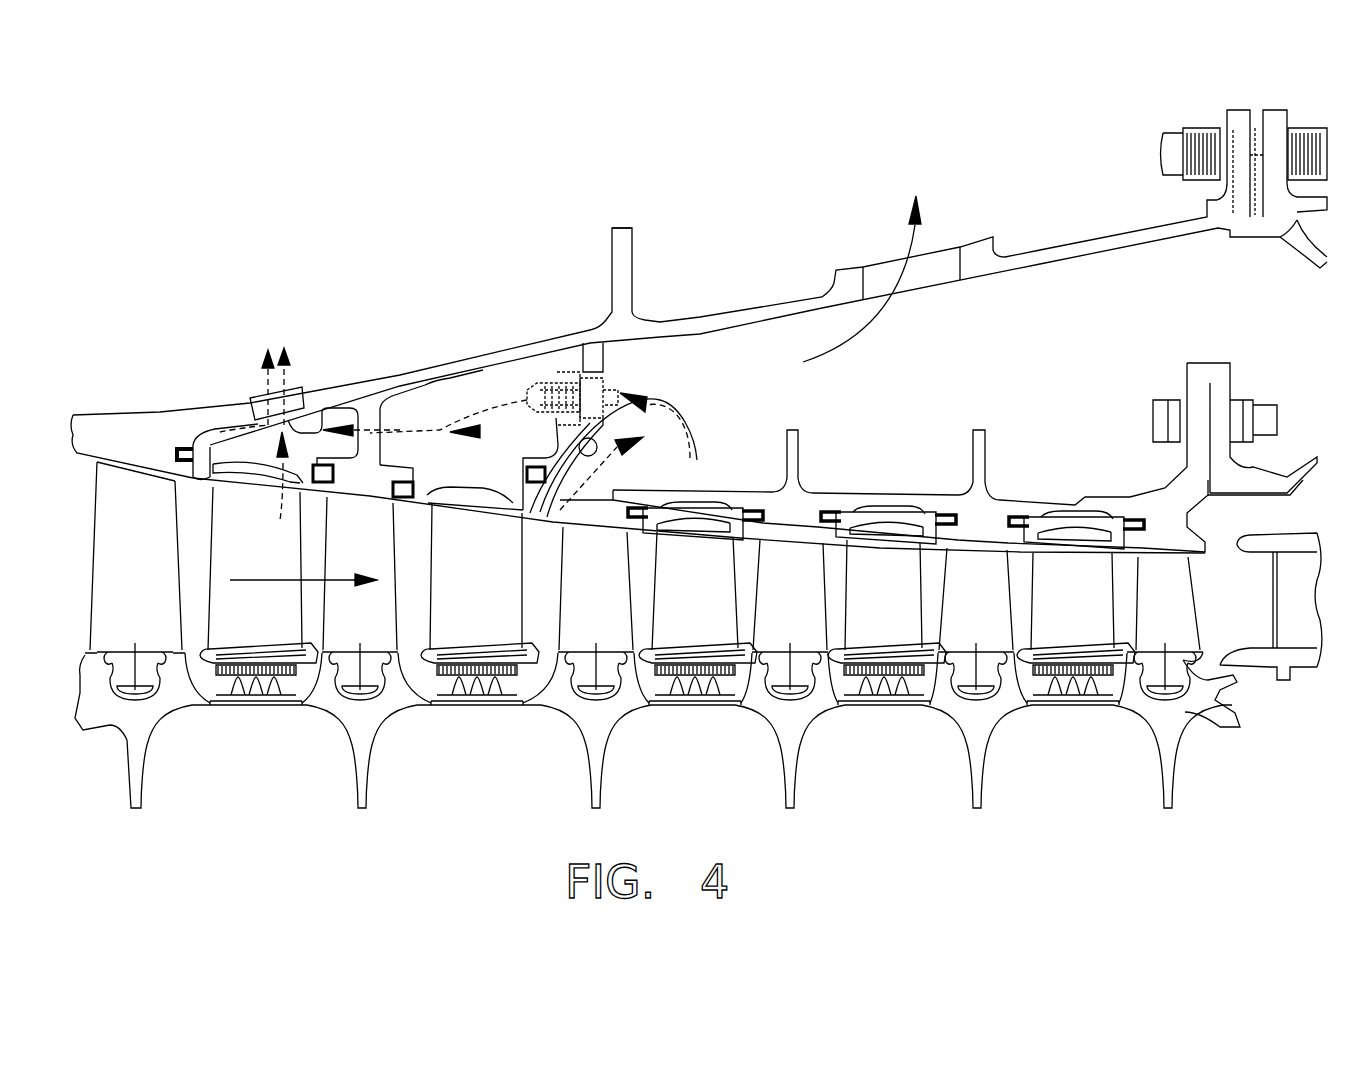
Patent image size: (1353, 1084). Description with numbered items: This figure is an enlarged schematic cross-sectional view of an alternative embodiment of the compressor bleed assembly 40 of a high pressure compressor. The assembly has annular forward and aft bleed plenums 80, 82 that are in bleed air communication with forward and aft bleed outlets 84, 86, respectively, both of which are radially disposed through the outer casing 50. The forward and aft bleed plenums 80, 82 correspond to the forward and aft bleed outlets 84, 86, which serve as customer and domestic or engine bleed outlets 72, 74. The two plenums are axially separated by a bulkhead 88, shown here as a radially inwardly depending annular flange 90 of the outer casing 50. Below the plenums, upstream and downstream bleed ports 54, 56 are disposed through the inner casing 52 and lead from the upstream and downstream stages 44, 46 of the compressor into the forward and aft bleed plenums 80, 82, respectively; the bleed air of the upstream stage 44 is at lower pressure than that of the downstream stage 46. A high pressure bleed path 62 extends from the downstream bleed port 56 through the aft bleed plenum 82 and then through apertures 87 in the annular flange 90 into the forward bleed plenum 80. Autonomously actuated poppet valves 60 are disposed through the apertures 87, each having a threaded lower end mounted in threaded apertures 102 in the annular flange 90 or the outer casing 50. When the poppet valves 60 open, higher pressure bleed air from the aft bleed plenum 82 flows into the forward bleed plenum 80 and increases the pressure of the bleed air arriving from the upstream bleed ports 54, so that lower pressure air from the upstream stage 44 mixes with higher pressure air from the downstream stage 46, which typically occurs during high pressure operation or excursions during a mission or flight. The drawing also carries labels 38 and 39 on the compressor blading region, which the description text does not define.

The turbine rotor blade 38 is at (283, 582).
The stator vane 39 is at (215, 567).
The compressor bleed assembly 40 is at (596, 222).
The upstream stage 44 is at (262, 483).
The downstream stage 46 is at (548, 515).
The outer casing 50 is at (1043, 252).
The inner casing 52 is at (850, 495).
The upstream bleed port 54 is at (290, 495).
The downstream bleed port 56 is at (560, 500).
The poppet valve 60 is at (545, 380).
The high pressure bleed path 62 is at (613, 457).
The customer bleed outlet 72 is at (293, 388).
The domestic or engine bleed outlet 74 is at (950, 281).
The forward bleed plenum 80 is at (275, 462).
The aft bleed plenum 82 is at (845, 418).
The forward bleed outlet 84 is at (250, 428).
The aft bleed outlet 86 is at (882, 300).
The apertures 87 is at (603, 378).
The bulkhead 88 is at (580, 442).
The annular flange 90 is at (588, 372).
The threaded apertures 102 is at (595, 400).